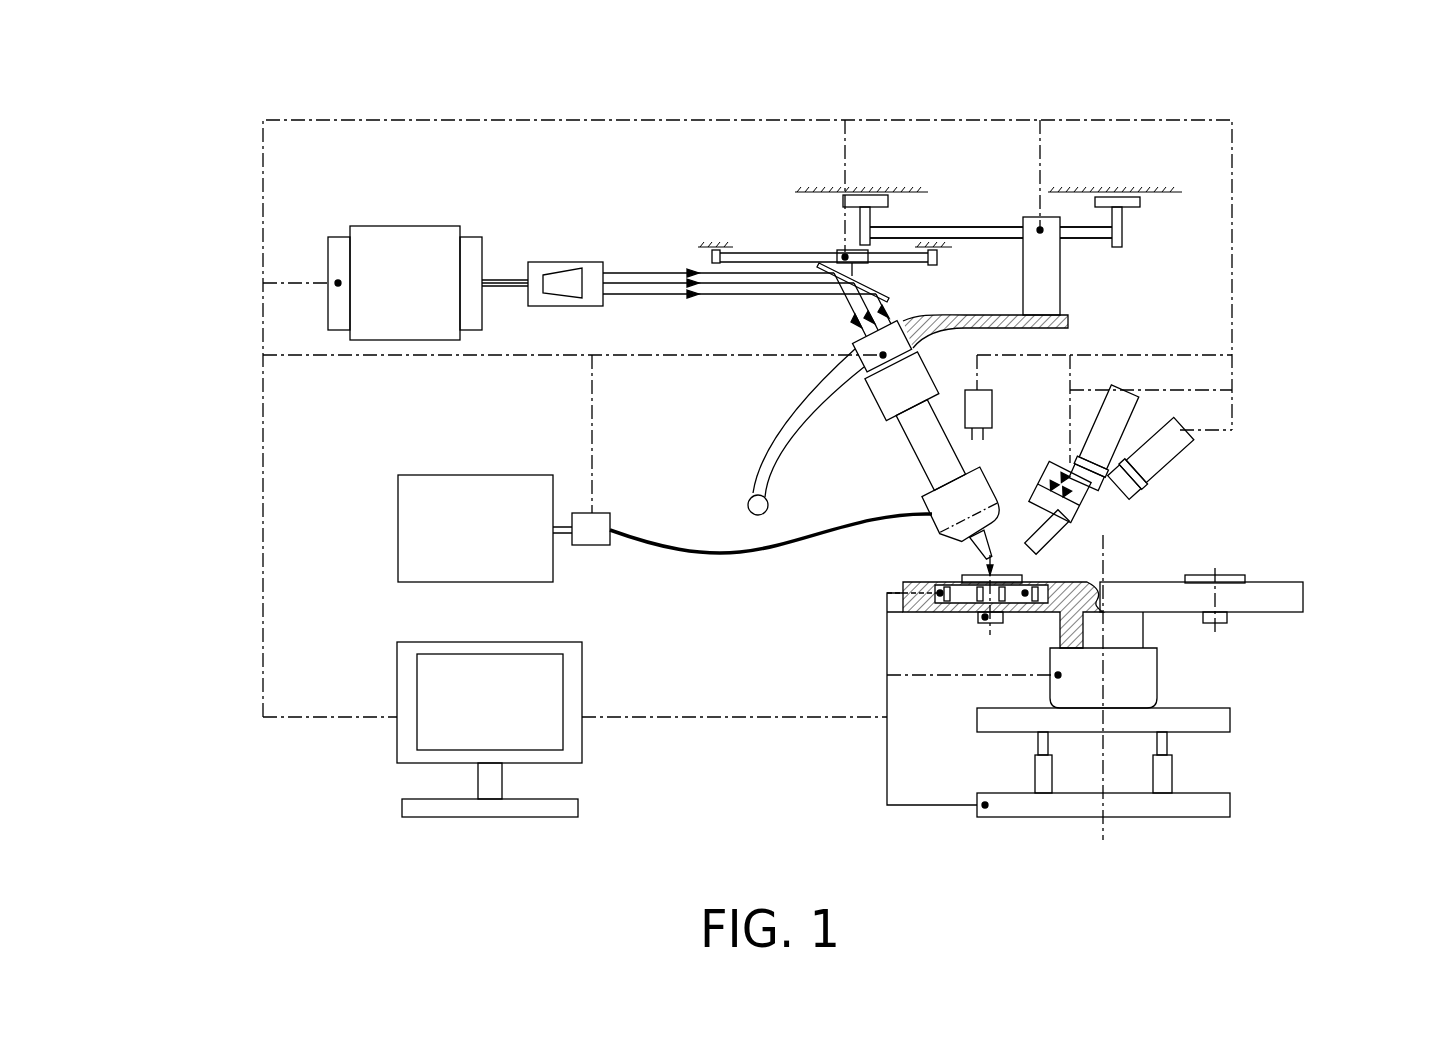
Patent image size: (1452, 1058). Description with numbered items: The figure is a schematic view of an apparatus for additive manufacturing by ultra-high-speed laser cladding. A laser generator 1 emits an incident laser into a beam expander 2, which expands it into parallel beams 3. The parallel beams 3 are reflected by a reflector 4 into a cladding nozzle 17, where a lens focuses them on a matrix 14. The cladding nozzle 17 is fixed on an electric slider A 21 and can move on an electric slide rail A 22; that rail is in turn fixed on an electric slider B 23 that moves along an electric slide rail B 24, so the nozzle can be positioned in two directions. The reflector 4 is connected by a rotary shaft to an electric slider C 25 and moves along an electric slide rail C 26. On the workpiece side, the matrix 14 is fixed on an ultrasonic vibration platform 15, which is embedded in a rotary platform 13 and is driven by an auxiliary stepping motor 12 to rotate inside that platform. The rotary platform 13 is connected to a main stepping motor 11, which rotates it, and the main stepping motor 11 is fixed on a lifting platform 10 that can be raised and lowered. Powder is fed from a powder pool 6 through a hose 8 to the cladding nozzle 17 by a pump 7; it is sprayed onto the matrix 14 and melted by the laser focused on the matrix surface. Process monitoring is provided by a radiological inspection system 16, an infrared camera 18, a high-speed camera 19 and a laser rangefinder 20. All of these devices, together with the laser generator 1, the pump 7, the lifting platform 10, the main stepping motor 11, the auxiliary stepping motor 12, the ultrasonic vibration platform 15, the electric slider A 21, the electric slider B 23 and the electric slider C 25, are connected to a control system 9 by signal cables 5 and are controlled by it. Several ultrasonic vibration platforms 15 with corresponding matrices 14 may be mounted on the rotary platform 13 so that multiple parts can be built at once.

The laser generator 1 is at (400, 275).
The beam expander 2 is at (565, 284).
The parallel beams 3 is at (675, 283).
The reflector 4 is at (847, 280).
The signal cable 5 is at (592, 398).
The powder pool 6 is at (478, 528).
The pump 7 is at (582, 535).
The hose 8 is at (680, 547).
The control system 9 is at (490, 688).
The lifting platform 10 is at (1162, 806).
The main stepping motor 11 is at (1128, 688).
The auxiliary stepping motor 12 is at (1218, 617).
The rotary platform 13 is at (1262, 598).
The matrix 14 is at (1223, 580).
The ultrasonic vibration platform 15 is at (1077, 582).
The radiological inspection system 16 is at (965, 503).
The cladding nozzle 17 is at (1080, 500).
The infrared camera 18 is at (1185, 430).
The high-speed camera 19 is at (1125, 390).
The laser rangefinder 20 is at (977, 407).
The electric slider A 21 is at (898, 352).
The electric slide rail A 22 is at (1043, 268).
The electric slider B 23 is at (1022, 320).
The electric slide rail B 24 is at (1077, 233).
The electric slider C 25 is at (853, 257).
The electric slide rail C 26 is at (795, 253).